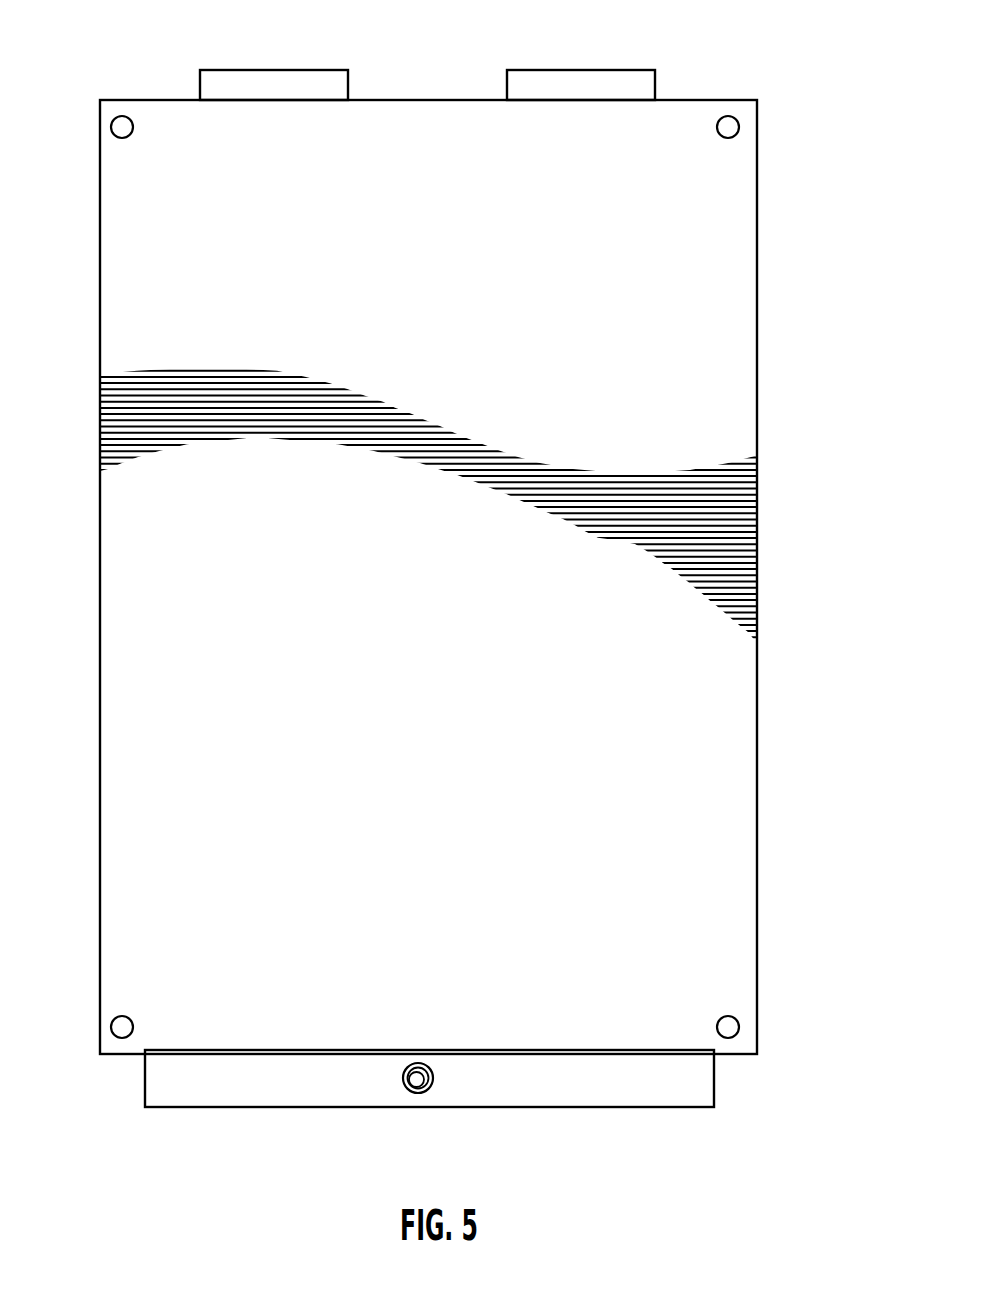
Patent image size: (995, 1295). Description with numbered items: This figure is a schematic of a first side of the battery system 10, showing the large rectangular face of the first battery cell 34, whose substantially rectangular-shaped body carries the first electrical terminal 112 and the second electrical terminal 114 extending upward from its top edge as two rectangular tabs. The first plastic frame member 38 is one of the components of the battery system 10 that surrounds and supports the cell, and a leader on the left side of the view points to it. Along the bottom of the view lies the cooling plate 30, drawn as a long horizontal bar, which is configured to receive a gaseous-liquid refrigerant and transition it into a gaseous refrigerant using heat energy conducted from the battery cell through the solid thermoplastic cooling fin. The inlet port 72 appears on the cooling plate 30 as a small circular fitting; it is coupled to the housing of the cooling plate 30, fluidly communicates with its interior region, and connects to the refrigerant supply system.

The battery system 10 is at (806, 178).
The cooling plate 30 is at (200, 1087).
The first battery cell 34 is at (310, 74).
The first plastic frame member 38 is at (135, 731).
The inlet port 72 is at (430, 1085).
The first electrical terminal 112 is at (243, 70).
The second electrical terminal 114 is at (608, 70).